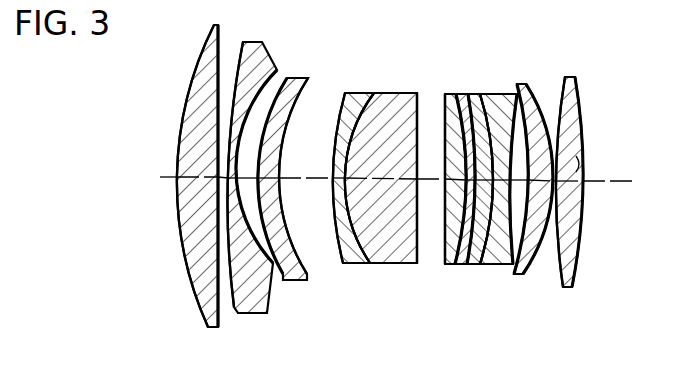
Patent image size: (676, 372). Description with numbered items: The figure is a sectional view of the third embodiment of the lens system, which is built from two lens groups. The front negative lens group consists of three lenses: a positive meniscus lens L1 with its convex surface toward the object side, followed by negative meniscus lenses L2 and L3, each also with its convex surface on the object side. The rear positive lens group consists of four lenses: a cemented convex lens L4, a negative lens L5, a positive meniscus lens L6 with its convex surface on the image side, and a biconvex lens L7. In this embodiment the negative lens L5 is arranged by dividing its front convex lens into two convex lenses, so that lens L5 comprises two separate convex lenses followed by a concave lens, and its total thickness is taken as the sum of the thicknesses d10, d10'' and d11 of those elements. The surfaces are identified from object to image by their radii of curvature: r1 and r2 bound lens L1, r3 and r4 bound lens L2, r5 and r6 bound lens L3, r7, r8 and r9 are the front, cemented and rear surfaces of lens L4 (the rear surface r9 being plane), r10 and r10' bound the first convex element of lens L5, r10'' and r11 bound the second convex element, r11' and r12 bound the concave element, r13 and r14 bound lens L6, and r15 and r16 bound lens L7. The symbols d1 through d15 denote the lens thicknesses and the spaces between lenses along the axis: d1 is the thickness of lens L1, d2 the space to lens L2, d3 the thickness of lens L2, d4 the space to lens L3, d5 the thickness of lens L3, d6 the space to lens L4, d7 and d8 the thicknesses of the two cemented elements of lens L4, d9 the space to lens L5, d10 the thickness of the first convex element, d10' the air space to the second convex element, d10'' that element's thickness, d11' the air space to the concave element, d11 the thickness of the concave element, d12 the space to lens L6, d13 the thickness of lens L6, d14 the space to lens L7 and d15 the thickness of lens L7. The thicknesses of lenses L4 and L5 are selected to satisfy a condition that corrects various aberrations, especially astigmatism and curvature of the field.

The positive meniscus lens L1 is at (196, 71).
The negative meniscus lens L2 is at (266, 41).
The negative meniscus lens L3 is at (300, 77).
The cemented convex lens L4 is at (380, 92).
The negative lens L5 is at (450, 93).
The positive meniscus lens L6 is at (520, 83).
The biconvex lens L7 is at (574, 77).
The thickness of lens L1 d1 is at (184, 176).
The air space between lenses L1 and L2 d2 is at (213, 177).
The thickness of lens L2 d3 is at (240, 133).
The air space between lenses L2 and L3 d4 is at (250, 177).
The thickness of lens L3 d5 is at (282, 177).
The air space between lenses L3 and L4 d6 is at (306, 180).
The thickness of front element of lens L4 d7 is at (338, 177).
The thickness of rear element of lens L4 d8 is at (377, 177).
The air space between lenses L4 and L5 d9 is at (433, 178).
The thickness of first convex element of lens L5 d10 is at (443, 198).
The air space within lens L5 d10' is at (447, 209).
The thickness of second convex element of lens L5 d10'' is at (473, 115).
The thickness of concave element of lens L5 d11 is at (508, 140).
The air space within lens L5 d11' is at (506, 105).
The air space between lenses L5 and L6 d12 is at (530, 118).
The thickness of lens L6 d13 is at (552, 135).
The air space between lenses L6 and L7 d14 is at (566, 148).
The thickness of lens L7 d15 is at (579, 164).
The radius of curvature of object-side surface of L1 r1 is at (197, 290).
The radius of curvature of image-side surface of L1 r2 is at (215, 313).
The radius of curvature of object-side surface of L2 r3 is at (234, 308).
The radius of curvature of image-side surface of L2 r4 is at (268, 247).
The radius of curvature of object-side surface of L3 r5 is at (281, 274).
The radius of curvature of image-side surface of L3 r6 is at (307, 272).
The radius of curvature of object-side surface of L4 r7 is at (343, 264).
The radius of curvature of cemented surface of L4 r8 is at (362, 264).
The radius of curvature of image-side surface of L4 r9 is at (417, 264).
The radius of curvature of object-side surface of first convex element of L5 r10 is at (444, 204).
The radius of curvature of image-side surface of first convex element of L5 r10' is at (452, 214).
The radius of curvature of object-side surface of second convex element of L5 r10'' is at (454, 225).
The radius of curvature of image-side surface of second convex element of L5 r11 is at (487, 202).
The radius of curvature of object-side surface of concave element of L5 r11' is at (502, 214).
The radius of curvature of image-side surface of L5 r12 is at (527, 262).
The radius of curvature of object-side surface of L6 r13 is at (513, 276).
The radius of curvature of image-side surface of L6 r14 is at (552, 233).
The radius of curvature of object-side surface of L7 r15 is at (565, 282).
The radius of curvature of image-side surface of L7 r16 is at (581, 263).